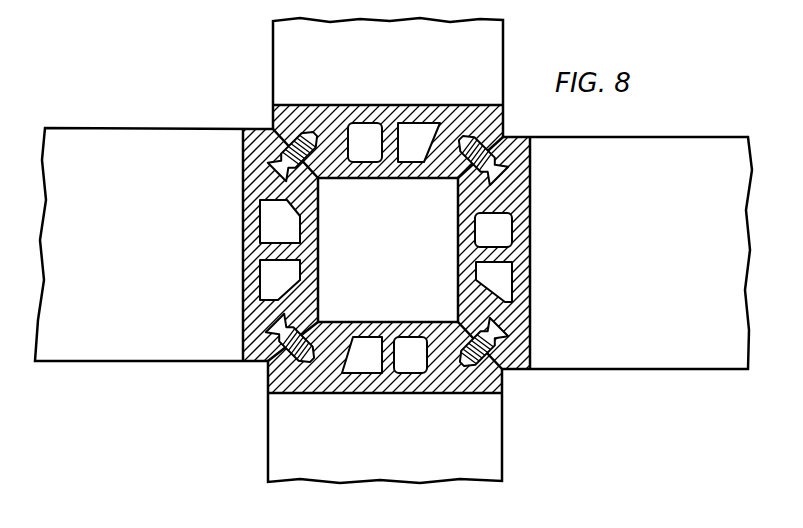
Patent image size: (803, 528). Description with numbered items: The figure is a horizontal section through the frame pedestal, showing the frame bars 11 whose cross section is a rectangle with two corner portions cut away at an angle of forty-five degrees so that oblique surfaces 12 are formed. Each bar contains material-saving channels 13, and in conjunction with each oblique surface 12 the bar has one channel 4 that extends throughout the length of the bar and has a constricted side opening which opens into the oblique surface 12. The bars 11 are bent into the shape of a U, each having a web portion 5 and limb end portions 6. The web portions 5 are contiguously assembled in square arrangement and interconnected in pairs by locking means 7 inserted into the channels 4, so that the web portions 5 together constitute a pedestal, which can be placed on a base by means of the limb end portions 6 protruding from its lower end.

The channel 4 is at (312, 365).
The web portion 5 is at (530, 266).
The limb end portion 6 is at (632, 357).
The locking means 7 is at (266, 322).
The frame bar 11 is at (378, 397).
The oblique surface 12 is at (319, 322).
The material-saving channel 13 is at (268, 224).